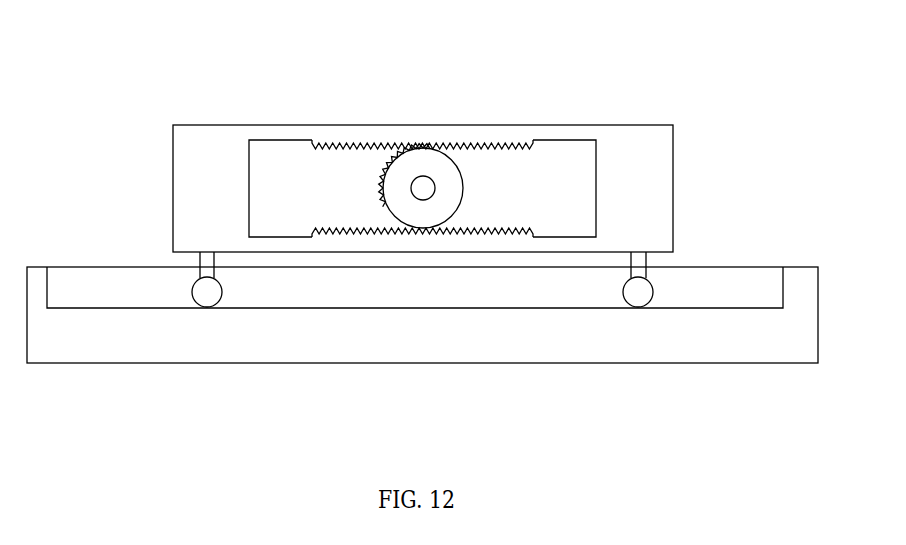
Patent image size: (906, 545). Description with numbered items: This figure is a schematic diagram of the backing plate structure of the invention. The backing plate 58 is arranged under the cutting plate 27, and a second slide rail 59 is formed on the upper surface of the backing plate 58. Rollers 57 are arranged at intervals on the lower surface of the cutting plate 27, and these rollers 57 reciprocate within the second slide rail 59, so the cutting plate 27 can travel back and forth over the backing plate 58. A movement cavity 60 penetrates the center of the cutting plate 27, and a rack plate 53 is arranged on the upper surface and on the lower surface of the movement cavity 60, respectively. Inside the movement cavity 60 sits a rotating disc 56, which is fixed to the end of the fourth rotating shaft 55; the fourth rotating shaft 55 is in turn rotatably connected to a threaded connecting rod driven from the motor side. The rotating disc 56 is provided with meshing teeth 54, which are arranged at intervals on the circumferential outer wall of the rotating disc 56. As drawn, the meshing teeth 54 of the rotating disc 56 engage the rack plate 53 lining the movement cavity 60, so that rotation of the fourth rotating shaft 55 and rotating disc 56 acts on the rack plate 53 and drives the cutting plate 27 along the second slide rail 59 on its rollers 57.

The cutting plate 27 is at (212, 152).
The rack plate 53 is at (335, 233).
The meshing teeth 54 is at (391, 157).
The fourth rotating shaft 55 is at (423, 188).
The rotating disc 56 is at (447, 187).
The rollers 57 is at (638, 292).
The backing plate 58 is at (333, 345).
The second slide rail 59 is at (137, 292).
The movement cavity 60 is at (292, 188).